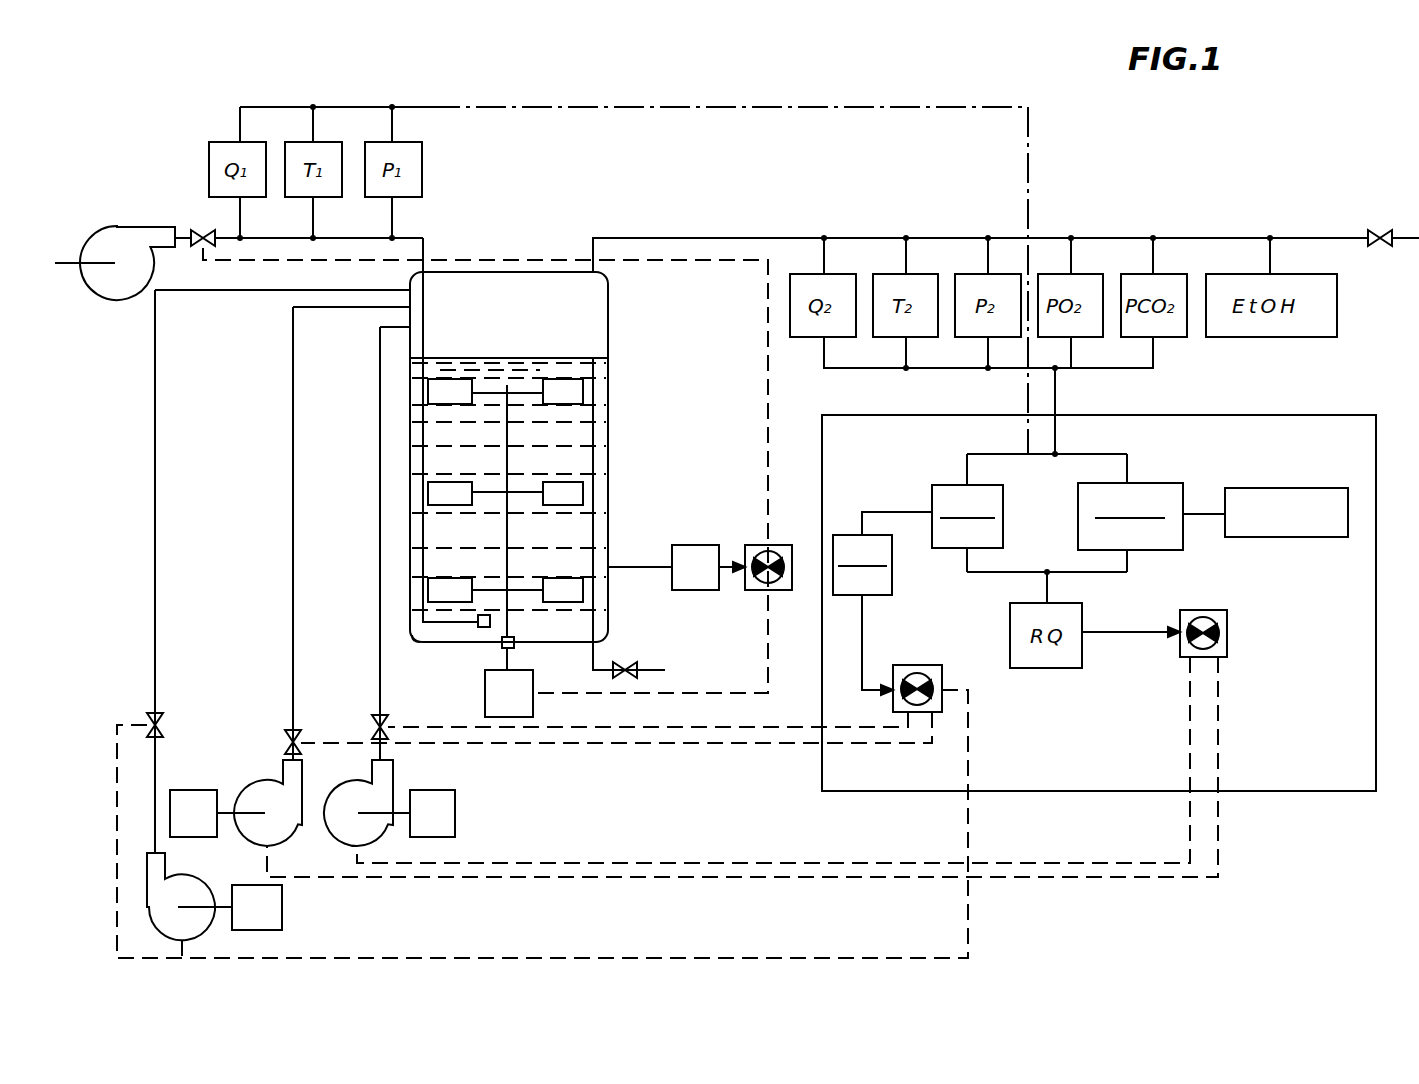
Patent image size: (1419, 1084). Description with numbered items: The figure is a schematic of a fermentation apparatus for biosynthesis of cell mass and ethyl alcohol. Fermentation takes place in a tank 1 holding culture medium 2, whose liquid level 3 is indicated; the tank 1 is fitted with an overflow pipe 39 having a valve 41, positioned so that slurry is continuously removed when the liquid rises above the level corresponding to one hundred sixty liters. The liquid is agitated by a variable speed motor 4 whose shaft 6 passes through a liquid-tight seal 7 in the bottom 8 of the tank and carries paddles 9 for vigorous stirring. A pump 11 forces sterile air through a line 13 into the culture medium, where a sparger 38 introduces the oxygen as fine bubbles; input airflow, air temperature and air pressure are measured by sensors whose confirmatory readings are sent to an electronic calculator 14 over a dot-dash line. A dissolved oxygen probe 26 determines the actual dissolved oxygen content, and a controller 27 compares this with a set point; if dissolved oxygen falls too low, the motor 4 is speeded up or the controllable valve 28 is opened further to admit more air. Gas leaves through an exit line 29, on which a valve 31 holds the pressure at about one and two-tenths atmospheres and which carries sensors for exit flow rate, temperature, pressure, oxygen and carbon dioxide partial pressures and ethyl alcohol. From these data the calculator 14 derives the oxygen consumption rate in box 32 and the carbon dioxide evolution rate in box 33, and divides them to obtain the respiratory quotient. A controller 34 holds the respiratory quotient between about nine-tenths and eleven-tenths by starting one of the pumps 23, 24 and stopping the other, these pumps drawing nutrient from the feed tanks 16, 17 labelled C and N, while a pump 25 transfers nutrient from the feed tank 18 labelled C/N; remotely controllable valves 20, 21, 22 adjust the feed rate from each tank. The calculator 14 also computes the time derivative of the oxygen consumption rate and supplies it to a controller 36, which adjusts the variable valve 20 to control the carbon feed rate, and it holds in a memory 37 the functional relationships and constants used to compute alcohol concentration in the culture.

The tank 1 is at (612, 535).
The culture medium 2 is at (608, 436).
The liquid level 3 is at (545, 358).
The variable speed motor 4 is at (533, 700).
The shaft 6 is at (505, 535).
The liquid-tight seal 7 is at (515, 647).
The bottom 8 is at (433, 644).
The paddles 9 is at (445, 382).
The pump 11 is at (117, 300).
The line 13 is at (423, 320).
The electronic calculator 14 is at (1345, 415).
The nutrient feed tank 16 is at (211, 773).
The nutrient feed tank 17 is at (455, 813).
The nutrient feed tank 18 is at (282, 918).
The valve 20 is at (285, 736).
The valve 21 is at (372, 718).
The valve 22 is at (165, 723).
The pump 23 is at (280, 846).
The pump 24 is at (356, 775).
The pump 25 is at (190, 883).
The dissolved oxygen probe 26 is at (698, 590).
The controller 27 is at (787, 591).
The controllable valve 28 is at (203, 228).
The line 29 is at (688, 240).
The valve 31 is at (1385, 232).
The box 32 is at (1003, 518).
The box 33 is at (1175, 544).
The controller 34 is at (1230, 641).
The controller 36 is at (912, 665).
The memory 37 is at (1307, 497).
The sparger 38 is at (478, 628).
The overflow pipe 39 is at (610, 413).
The valve 41 is at (627, 664).